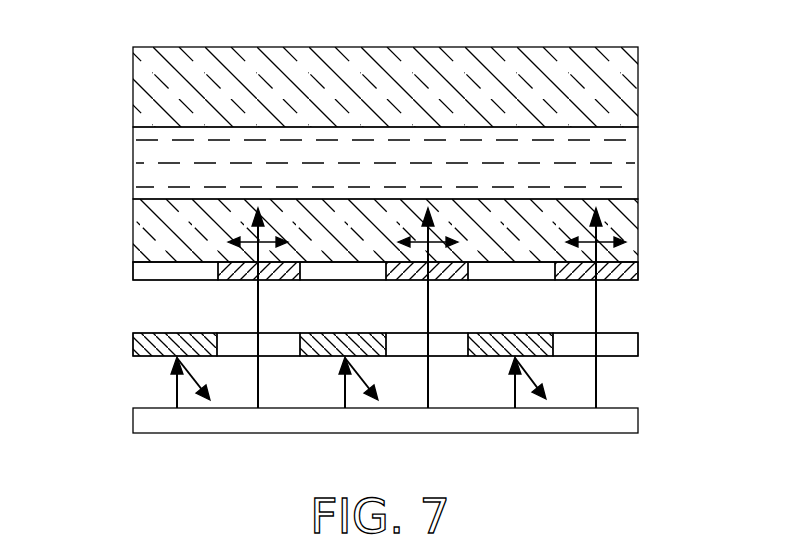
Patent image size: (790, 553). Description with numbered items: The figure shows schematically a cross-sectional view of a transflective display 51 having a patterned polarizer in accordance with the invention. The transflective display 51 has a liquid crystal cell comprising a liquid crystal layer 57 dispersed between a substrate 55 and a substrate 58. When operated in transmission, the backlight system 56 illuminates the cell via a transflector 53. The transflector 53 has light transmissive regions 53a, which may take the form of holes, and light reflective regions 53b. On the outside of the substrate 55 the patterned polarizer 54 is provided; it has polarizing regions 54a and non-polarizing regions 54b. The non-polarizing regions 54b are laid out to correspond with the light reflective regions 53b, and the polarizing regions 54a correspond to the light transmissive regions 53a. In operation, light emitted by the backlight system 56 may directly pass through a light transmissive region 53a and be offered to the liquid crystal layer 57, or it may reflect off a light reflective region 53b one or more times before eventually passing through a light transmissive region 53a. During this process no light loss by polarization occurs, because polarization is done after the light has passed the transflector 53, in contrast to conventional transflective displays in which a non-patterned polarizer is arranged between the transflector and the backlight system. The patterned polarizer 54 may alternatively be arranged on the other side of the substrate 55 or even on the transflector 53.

The transflective display 51 is at (70, 145).
The transflector 53 is at (640, 345).
The light transmissive regions 53a is at (235, 347).
The light reflective regions 53b is at (147, 347).
The patterned polarizer 54 is at (640, 271).
The polarizing regions 54a is at (235, 270).
The non-polarizing regions 54b is at (172, 270).
The substrate 55 is at (620, 218).
The backlight system 56 is at (620, 419).
The liquid crystal layer 57 is at (620, 172).
The substrate 58 is at (620, 88).